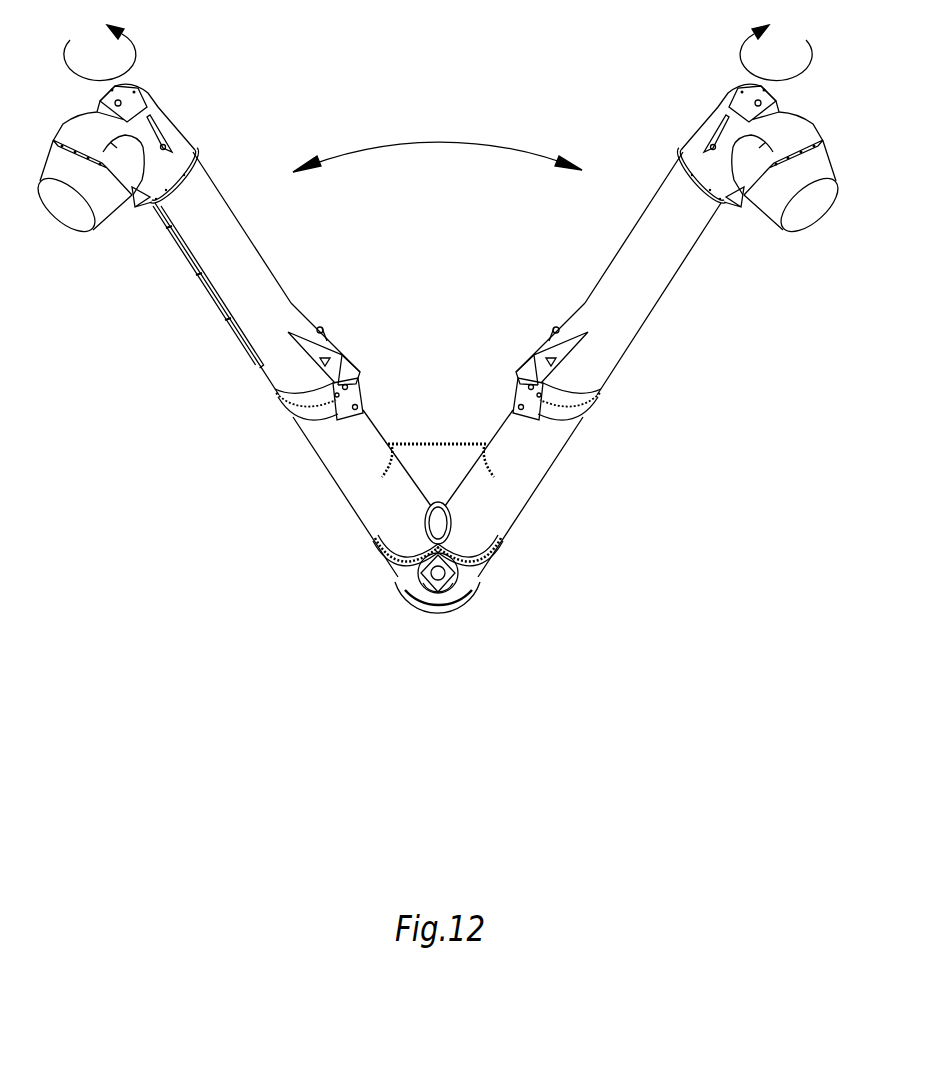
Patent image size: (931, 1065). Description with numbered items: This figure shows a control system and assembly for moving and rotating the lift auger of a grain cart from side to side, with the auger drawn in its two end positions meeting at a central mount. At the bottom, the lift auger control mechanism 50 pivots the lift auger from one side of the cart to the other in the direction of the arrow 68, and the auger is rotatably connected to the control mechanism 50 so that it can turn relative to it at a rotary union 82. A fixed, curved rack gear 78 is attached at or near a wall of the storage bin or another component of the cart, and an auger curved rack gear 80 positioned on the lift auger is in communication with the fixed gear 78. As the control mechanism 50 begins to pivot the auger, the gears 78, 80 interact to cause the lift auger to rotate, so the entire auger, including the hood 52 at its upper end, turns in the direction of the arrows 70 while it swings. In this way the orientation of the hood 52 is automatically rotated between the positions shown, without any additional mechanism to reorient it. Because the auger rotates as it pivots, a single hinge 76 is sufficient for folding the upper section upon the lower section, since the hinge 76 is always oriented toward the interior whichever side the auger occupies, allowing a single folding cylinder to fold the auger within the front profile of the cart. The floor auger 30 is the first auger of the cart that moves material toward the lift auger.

The floor auger 30 is at (417, 579).
The lift auger control mechanism 50 is at (470, 594).
The hood 52 is at (165, 121).
The arrow 68 is at (438, 142).
The arrows 70 is at (138, 48).
The hinge 76 is at (360, 363).
The fixed curved rack gear 78 is at (447, 443).
The auger curved rack gear 80 is at (391, 462).
The rotary union 82 is at (375, 545).